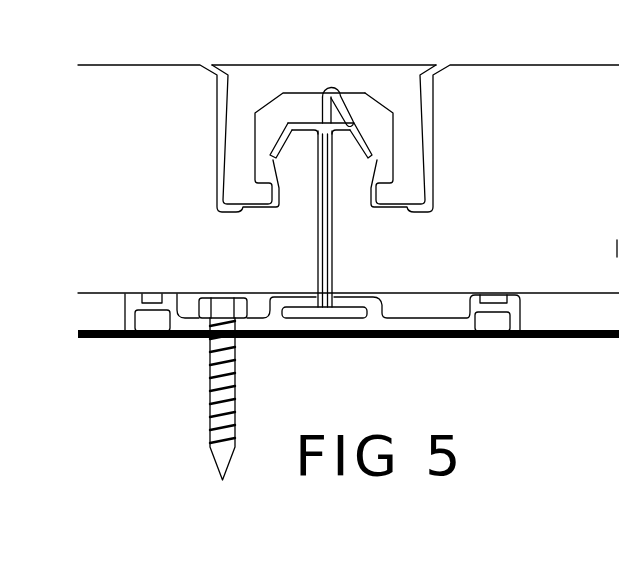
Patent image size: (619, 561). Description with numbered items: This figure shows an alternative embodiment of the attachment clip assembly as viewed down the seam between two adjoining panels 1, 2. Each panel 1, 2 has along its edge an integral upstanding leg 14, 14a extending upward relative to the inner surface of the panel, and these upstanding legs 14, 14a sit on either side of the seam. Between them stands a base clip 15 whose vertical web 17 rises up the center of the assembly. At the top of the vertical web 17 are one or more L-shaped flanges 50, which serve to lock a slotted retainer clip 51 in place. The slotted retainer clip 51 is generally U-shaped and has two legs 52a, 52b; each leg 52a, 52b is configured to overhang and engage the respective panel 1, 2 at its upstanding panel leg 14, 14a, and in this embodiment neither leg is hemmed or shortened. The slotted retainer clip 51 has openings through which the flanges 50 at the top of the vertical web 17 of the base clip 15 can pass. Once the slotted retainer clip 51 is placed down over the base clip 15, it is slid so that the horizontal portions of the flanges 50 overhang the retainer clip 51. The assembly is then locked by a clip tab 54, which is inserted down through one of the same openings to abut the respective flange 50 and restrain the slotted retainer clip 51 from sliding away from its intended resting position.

The panel 1 is at (132, 80).
The panel 2 is at (481, 78).
The upstanding leg 14 is at (324, 155).
The upstanding leg 14a is at (347, 188).
The base clip 15 is at (325, 245).
The vertical web 17 is at (332, 224).
The L-shaped flange 50 is at (319, 93).
The slotted retainer clip 51 is at (367, 136).
The leg 52a is at (280, 148).
The leg 52b is at (377, 153).
The clip tab 54 is at (350, 94).